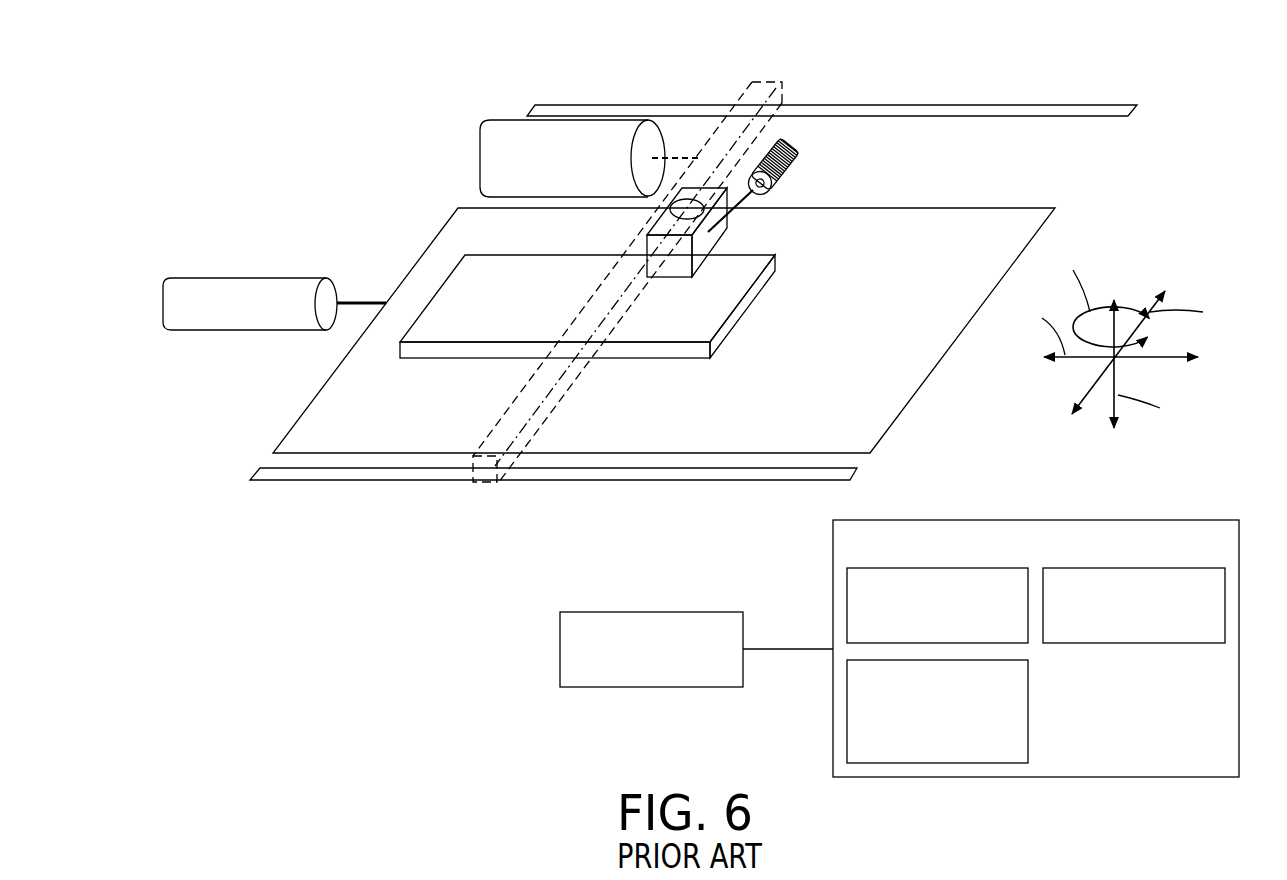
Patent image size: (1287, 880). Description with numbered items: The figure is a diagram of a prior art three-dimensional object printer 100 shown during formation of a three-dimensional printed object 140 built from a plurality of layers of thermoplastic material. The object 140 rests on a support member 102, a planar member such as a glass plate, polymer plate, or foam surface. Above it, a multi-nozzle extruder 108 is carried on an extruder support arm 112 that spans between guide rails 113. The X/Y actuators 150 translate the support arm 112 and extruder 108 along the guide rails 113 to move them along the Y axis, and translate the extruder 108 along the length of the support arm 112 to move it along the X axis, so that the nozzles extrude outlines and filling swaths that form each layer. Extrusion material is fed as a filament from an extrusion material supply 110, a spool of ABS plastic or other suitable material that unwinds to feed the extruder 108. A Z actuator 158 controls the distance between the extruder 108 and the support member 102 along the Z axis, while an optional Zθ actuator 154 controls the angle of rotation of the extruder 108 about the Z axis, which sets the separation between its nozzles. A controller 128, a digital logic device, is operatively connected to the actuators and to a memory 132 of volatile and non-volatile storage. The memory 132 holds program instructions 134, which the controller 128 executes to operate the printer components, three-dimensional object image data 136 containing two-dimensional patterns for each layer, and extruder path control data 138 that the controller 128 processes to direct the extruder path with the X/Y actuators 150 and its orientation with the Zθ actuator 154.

The three-dimensional object printer 100 is at (357, 92).
The support member 102 is at (917, 393).
The multi-nozzle extruder 108 is at (714, 232).
The extrusion material supply 110 is at (800, 150).
The extruder support arm 112 is at (753, 85).
The guide rails 113 is at (890, 105).
The controller 128 is at (560, 650).
The memory 132 is at (1022, 520).
The program instructions 134 is at (847, 600).
The 3D object image data 136 is at (1133, 643).
The extruder path control data 138 is at (1030, 710).
The three-dimensional printed object 140 is at (675, 358).
The X/Y actuators 150 is at (480, 157).
The Zθ actuator 154 is at (672, 207).
The Z actuator 158 is at (252, 278).